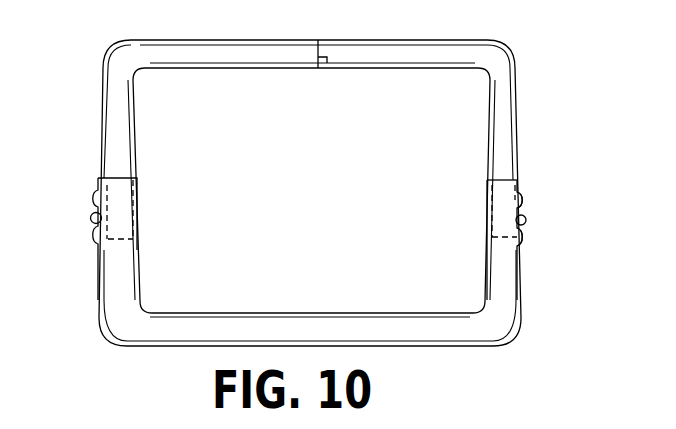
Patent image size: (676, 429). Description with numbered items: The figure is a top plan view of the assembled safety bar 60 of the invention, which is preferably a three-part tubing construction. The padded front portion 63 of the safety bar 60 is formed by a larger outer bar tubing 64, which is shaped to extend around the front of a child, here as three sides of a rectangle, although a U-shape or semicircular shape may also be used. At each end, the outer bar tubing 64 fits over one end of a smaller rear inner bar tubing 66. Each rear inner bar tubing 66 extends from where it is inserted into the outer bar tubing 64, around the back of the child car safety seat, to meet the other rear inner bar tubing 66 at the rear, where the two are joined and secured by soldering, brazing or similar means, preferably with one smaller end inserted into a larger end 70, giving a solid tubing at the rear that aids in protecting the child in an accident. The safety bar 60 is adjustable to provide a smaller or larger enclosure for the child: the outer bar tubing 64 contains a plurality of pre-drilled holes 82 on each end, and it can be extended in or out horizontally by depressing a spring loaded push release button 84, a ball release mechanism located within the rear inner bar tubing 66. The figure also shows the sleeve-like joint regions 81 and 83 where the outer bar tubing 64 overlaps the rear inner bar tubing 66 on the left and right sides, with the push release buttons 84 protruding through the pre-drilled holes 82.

The safety bar 60 is at (88, 282).
The padded front portion 63 is at (195, 347).
The outer bar tubing 64 is at (478, 338).
The rear inner bar tubing 66 is at (112, 112).
The larger end 70 is at (329, 62).
The left connector 81 is at (129, 246).
The pre-drilled holes 82 is at (522, 200).
The right connector 83 is at (503, 178).
The spring loaded push release button 84 is at (88, 220).